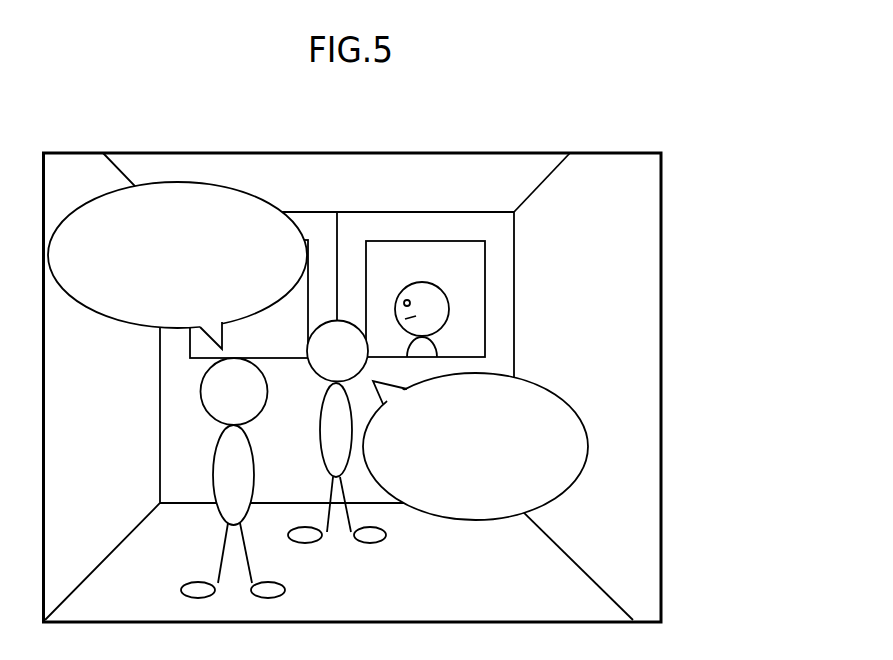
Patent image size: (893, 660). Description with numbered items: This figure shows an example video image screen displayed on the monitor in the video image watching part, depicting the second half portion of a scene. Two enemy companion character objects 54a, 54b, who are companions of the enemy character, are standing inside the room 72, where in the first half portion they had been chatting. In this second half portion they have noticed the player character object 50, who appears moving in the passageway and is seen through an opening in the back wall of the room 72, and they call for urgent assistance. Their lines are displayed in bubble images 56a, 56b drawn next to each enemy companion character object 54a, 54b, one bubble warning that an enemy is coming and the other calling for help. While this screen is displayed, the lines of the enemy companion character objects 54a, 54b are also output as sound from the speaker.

The player character object 50 is at (448, 307).
The enemy companion character object 54a is at (317, 410).
The enemy companion character object 54b is at (217, 512).
The bubble image 56a is at (497, 520).
The bubble image 56b is at (120, 326).
The room 72 is at (638, 332).